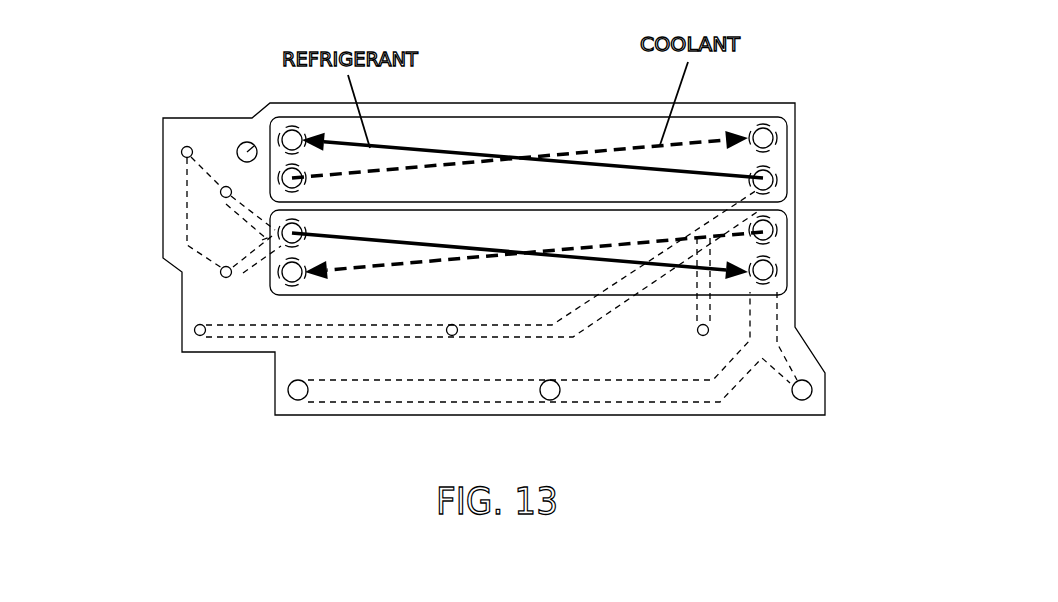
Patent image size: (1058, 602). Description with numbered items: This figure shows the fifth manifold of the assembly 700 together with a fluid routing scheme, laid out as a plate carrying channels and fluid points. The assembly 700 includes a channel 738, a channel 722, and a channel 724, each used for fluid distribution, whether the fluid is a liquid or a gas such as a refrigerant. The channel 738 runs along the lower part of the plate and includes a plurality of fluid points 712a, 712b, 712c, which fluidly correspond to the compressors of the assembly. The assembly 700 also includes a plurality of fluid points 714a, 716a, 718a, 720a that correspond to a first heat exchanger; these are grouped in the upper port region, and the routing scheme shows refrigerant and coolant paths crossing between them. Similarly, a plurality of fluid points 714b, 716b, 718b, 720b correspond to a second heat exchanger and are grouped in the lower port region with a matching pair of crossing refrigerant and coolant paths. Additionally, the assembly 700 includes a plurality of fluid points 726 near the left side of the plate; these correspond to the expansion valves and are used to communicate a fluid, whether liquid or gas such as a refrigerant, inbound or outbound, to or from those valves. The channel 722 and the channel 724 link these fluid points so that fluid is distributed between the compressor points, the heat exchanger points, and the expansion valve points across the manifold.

The assembly 700 is at (153, 412).
The fluid point 712a is at (802, 400).
The fluid point 712b is at (550, 400).
The fluid point 712c is at (298, 400).
The fluid point 714a is at (776, 138).
The fluid point 714b is at (776, 230).
The fluid point 716a is at (776, 180).
The fluid point 716b is at (776, 270).
The fluid point 718a is at (283, 130).
The fluid point 718b is at (288, 246).
The fluid point 720a is at (283, 173).
The fluid point 720b is at (293, 285).
The channel 722 is at (302, 338).
The channel 724 is at (250, 263).
The fluid points 726 is at (212, 260).
The channel 738 is at (417, 403).